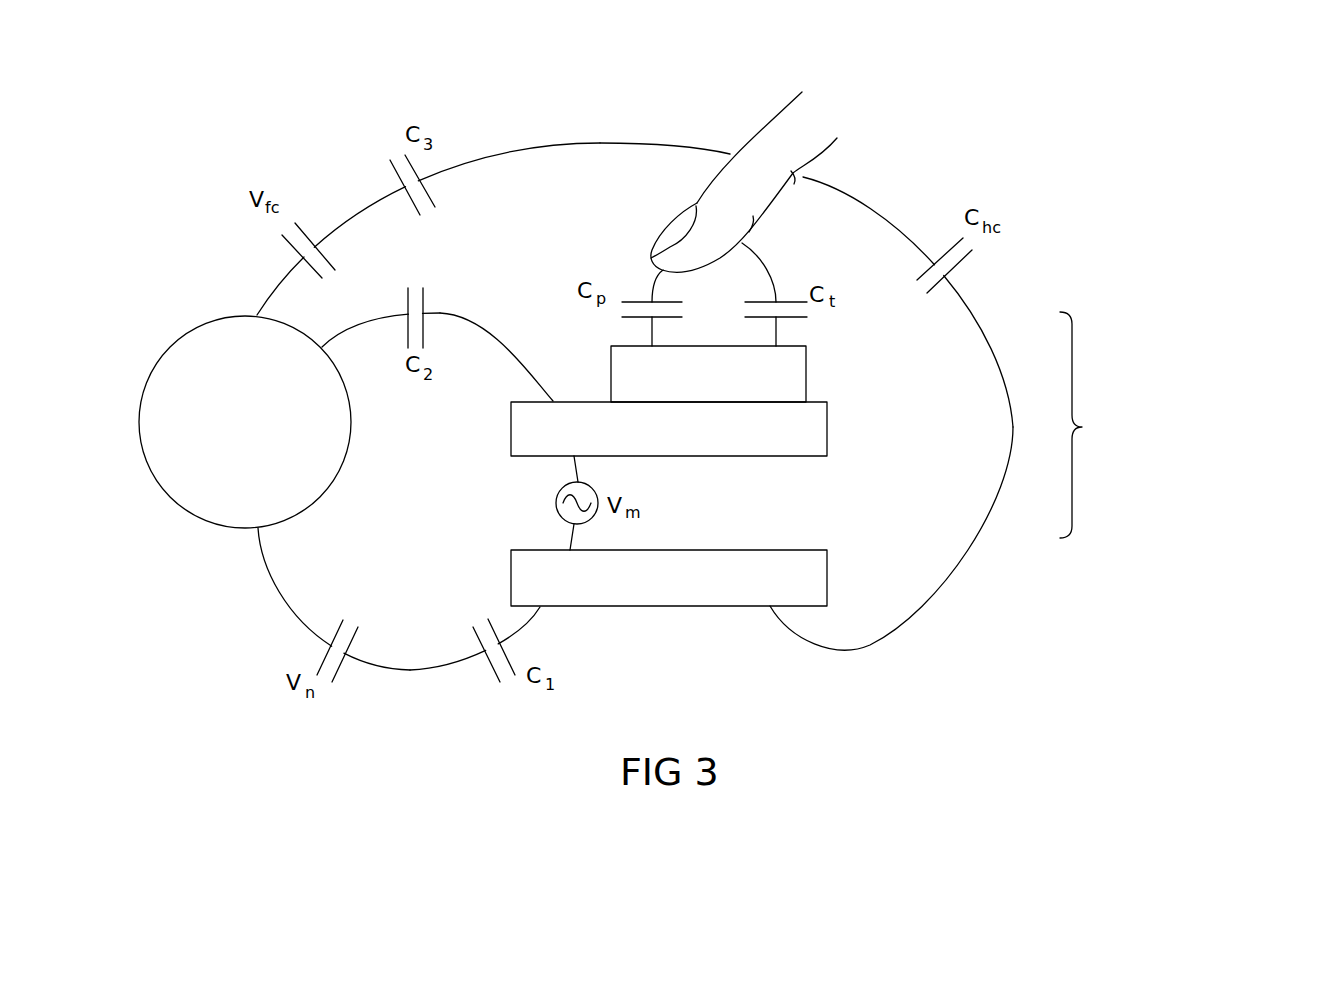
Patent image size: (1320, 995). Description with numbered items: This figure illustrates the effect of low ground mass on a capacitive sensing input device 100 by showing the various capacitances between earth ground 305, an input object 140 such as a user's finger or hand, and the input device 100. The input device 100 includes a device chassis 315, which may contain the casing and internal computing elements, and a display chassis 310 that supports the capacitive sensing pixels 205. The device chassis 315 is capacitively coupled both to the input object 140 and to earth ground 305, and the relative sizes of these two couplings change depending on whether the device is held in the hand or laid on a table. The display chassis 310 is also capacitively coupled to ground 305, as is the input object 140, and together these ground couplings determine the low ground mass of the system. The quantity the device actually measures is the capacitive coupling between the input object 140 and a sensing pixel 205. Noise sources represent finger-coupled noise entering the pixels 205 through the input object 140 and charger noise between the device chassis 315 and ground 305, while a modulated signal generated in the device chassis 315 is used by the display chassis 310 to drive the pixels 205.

The input device 100 is at (1160, 425).
The input object 140 is at (810, 119).
The capacitive sensing pixels 205 is at (792, 384).
The earth ground 305 is at (221, 478).
The display chassis 310 is at (813, 439).
The device chassis 315 is at (813, 588).